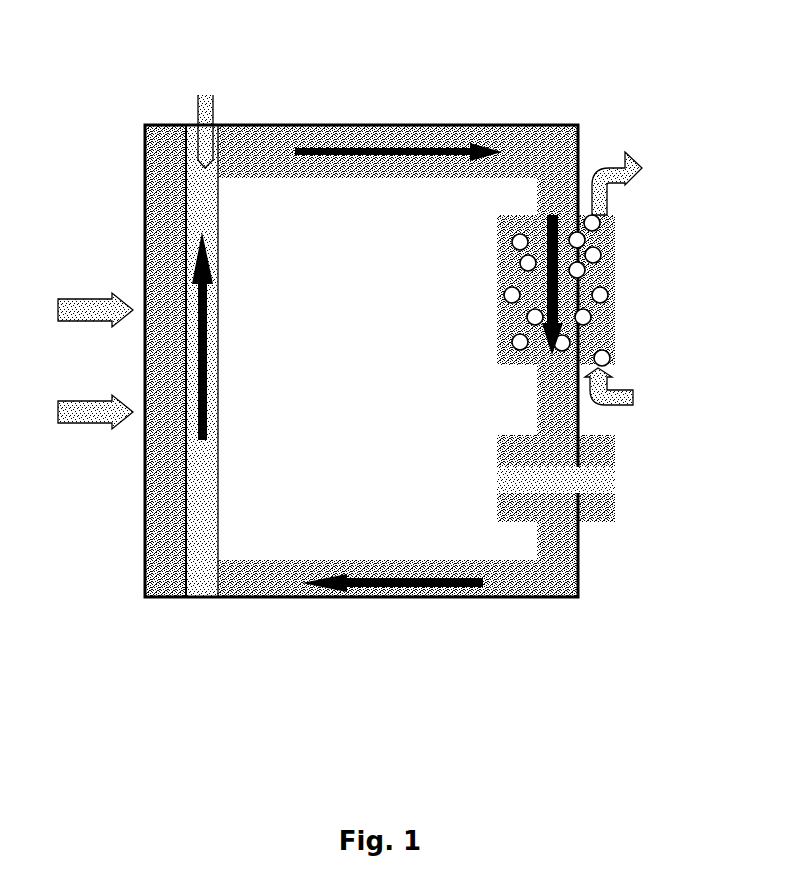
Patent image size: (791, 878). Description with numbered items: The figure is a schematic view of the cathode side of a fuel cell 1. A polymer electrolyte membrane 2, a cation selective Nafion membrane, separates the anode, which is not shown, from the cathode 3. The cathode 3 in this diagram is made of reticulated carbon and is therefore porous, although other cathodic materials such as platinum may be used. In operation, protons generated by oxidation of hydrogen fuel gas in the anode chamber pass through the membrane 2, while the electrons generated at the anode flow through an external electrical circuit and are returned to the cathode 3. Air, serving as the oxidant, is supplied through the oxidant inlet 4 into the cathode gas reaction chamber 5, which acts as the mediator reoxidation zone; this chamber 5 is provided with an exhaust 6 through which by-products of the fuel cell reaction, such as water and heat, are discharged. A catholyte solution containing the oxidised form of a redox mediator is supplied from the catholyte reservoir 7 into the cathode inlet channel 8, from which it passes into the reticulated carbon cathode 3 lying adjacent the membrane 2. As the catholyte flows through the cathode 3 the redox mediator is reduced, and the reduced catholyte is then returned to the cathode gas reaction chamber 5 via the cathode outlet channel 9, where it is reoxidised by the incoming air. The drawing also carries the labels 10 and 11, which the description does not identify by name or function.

The fuel cell 1 is at (600, 80).
The polymer electrolyte membrane 2 is at (160, 545).
The cathode 3 is at (210, 595).
The oxidant inlet 4 is at (630, 398).
The cathode gas reaction chamber 5 is at (603, 277).
The exhaust 6 is at (637, 183).
The catholyte reservoir 7 is at (597, 470).
The cathode inlet channel 8 is at (486, 607).
The cathode outlet channel 9 is at (364, 162).
The external heat flow 10 is at (72, 362).
The feed inlet 11 is at (200, 112).